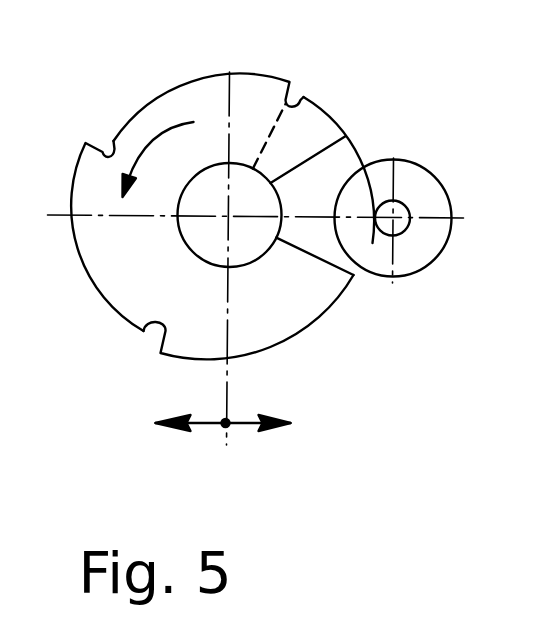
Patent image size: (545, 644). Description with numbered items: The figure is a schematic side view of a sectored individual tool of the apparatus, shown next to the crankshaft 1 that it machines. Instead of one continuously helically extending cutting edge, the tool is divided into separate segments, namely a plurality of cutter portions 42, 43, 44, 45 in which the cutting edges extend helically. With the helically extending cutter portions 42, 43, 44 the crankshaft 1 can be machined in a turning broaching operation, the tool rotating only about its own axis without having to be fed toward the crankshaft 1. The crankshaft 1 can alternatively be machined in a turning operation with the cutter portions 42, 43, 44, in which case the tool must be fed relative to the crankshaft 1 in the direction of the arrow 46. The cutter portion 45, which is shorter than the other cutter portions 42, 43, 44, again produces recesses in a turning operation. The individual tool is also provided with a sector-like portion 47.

The cutter portion 42 is at (319, 318).
The cutter portion 43 is at (80, 257).
The cutter portion 44 is at (148, 106).
The cutter portion 45 is at (331, 114).
The sector-like portion 47 is at (330, 168).
The crankshaft 1 is at (428, 205).
The arrow 46 is at (238, 427).